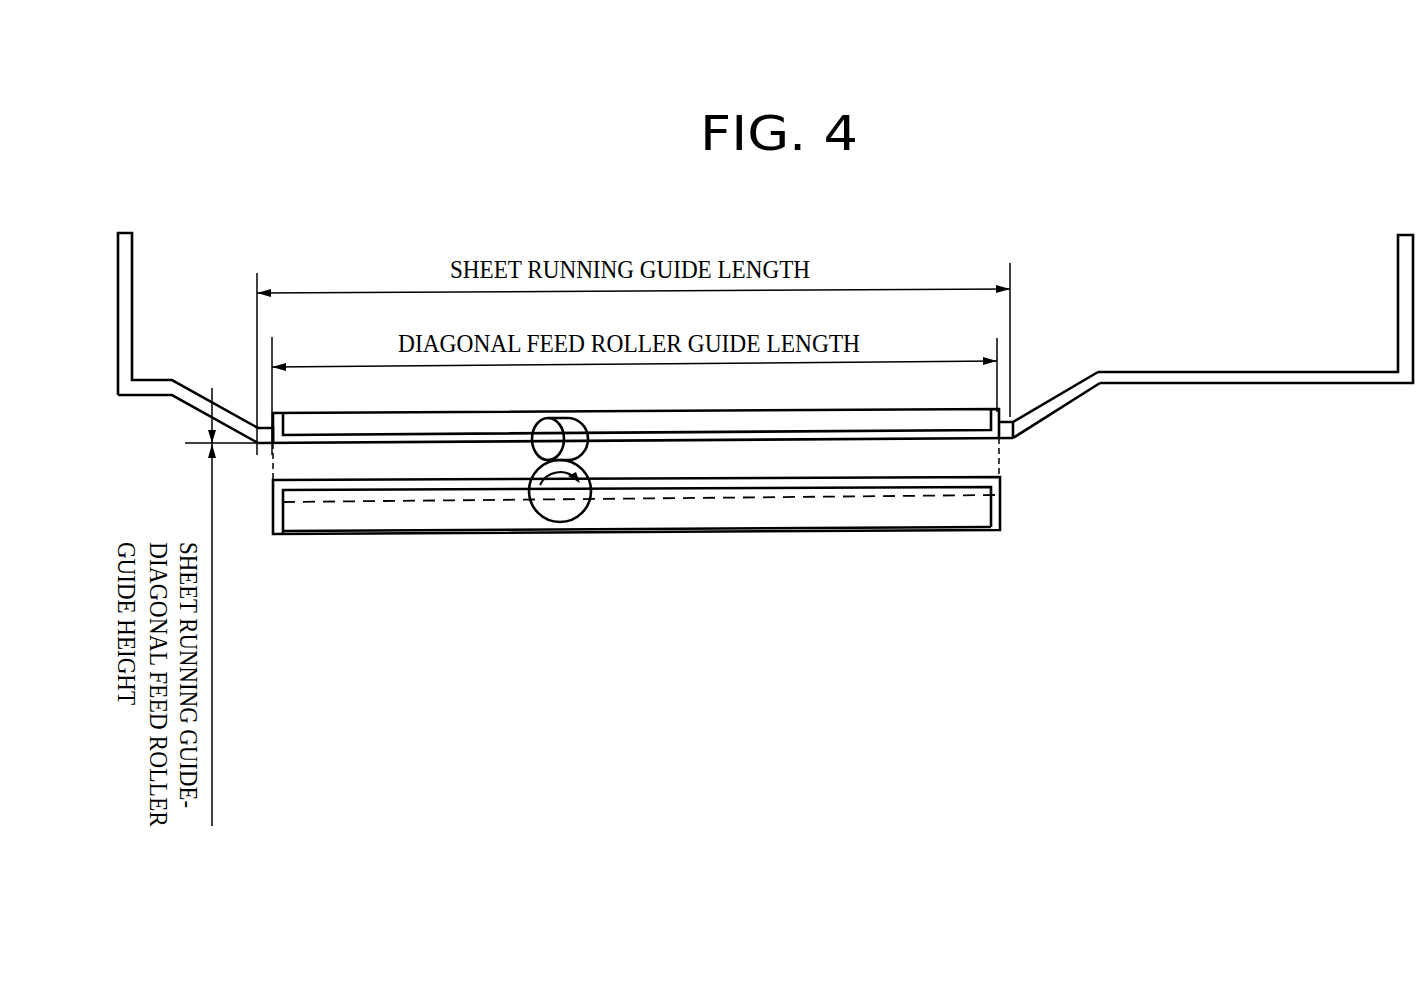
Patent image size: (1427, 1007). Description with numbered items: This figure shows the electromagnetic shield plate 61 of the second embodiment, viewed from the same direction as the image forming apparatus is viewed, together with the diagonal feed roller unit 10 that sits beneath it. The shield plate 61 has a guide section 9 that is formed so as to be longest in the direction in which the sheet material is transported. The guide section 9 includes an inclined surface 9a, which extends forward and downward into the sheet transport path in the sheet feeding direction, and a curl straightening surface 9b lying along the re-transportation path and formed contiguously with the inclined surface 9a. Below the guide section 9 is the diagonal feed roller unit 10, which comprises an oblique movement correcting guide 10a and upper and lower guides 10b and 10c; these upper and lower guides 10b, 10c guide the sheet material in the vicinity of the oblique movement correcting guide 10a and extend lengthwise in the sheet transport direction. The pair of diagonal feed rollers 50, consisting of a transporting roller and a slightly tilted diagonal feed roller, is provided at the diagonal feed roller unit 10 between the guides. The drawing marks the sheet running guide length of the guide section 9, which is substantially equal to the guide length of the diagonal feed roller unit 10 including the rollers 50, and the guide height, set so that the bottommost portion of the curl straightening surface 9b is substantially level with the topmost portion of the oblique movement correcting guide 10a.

The guide section 9 is at (1022, 418).
The inclined surface 9a is at (186, 387).
The curl straightening surface 9b is at (273, 446).
The diagonal feed roller unit 10 is at (636, 538).
The oblique movement correcting guide 10a is at (1003, 456).
The upper guide 10b is at (883, 441).
The lower guide 10c is at (842, 484).
The pair of diagonal feed rollers 50 is at (553, 496).
The electromagnetic shield plate 61 is at (1246, 394).